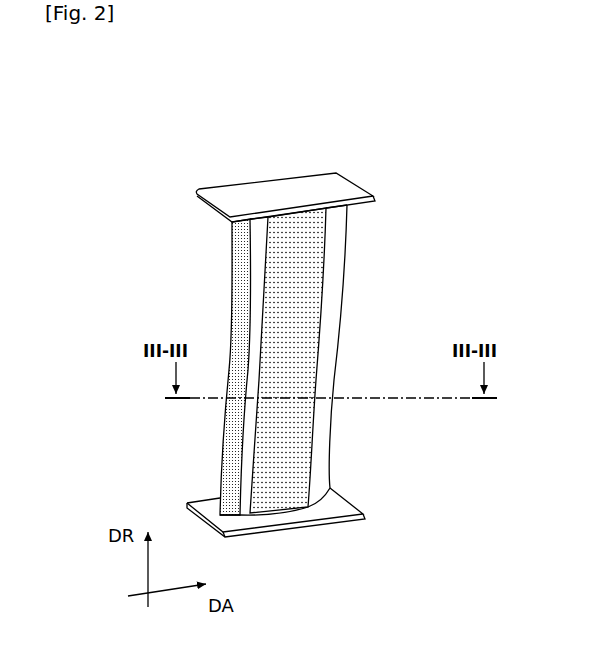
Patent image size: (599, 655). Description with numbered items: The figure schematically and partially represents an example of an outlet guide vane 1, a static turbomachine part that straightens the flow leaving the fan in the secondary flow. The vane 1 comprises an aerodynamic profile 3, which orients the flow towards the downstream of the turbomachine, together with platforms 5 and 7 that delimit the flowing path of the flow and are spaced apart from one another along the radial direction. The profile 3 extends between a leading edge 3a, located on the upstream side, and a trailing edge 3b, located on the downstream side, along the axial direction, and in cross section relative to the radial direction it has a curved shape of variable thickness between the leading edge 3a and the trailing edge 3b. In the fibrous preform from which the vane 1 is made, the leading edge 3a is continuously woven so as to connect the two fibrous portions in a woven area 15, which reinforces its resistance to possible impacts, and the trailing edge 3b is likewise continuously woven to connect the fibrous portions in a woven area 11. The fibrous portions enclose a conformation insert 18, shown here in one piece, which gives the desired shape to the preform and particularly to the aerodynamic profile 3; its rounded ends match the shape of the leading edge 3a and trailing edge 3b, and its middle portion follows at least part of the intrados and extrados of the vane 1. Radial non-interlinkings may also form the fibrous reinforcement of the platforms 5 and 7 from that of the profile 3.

The outlet guide vane 1 is at (190, 156).
The aerodynamic profile 3 is at (342, 248).
The leading edge 3a is at (230, 443).
The trailing edge 3b is at (329, 452).
The platform 5 is at (312, 186).
The platform 7 is at (357, 502).
The woven area 11 is at (362, 327).
The woven area 15 is at (233, 316).
The conformation insert 18 is at (303, 371).